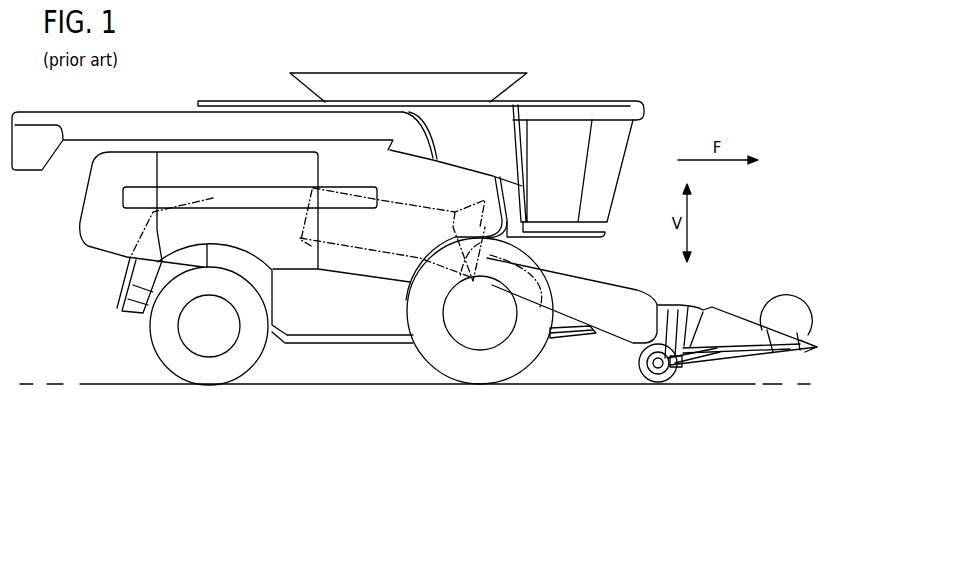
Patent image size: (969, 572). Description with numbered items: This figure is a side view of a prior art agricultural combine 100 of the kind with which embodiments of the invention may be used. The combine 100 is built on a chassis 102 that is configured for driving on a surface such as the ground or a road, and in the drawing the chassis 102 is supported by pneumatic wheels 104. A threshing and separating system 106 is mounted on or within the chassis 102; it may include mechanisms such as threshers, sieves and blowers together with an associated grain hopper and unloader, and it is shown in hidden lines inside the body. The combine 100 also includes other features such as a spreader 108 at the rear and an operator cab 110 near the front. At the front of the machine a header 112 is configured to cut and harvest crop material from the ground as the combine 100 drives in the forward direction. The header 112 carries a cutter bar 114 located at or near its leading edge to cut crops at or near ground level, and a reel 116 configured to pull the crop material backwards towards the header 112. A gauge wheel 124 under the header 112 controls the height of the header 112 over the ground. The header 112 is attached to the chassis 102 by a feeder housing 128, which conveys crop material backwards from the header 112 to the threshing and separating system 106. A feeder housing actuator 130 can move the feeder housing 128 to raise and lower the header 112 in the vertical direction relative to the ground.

The agricultural combine 100 is at (680, 85).
The chassis 102 is at (290, 312).
The pneumatic wheels 104 is at (452, 355).
The threshing and separating system 106 is at (377, 253).
The spreader 108 is at (122, 291).
The operator cab 110 is at (572, 135).
The header 112 is at (727, 337).
The cutter bar 114 is at (773, 357).
The reel 116 is at (777, 307).
The gauge wheel 124 is at (640, 365).
The feeder housing 128 is at (613, 322).
The feeder housing actuator 130 is at (557, 337).